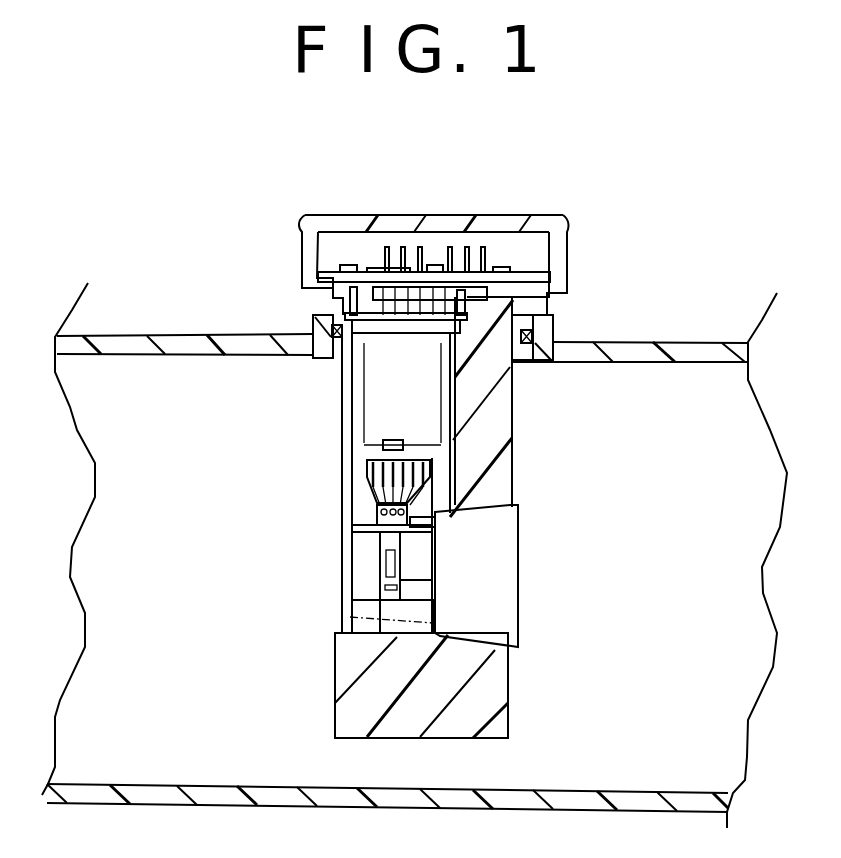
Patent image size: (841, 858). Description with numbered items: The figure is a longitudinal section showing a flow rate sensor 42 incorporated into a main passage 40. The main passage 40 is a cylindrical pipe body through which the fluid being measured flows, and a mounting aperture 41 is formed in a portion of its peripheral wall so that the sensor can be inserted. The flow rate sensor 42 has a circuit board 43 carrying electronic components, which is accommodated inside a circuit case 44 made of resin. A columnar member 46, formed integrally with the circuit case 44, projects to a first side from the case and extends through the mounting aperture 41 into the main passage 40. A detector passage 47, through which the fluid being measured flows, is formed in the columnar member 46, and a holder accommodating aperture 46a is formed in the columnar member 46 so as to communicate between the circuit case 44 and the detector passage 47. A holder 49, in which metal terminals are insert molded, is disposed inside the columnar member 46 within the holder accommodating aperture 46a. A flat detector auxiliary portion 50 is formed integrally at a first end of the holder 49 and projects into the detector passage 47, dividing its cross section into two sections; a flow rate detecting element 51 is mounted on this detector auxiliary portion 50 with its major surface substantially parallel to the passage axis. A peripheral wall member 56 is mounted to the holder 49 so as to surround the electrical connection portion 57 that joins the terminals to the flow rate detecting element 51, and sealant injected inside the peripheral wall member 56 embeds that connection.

The main passage 40 is at (712, 342).
The mounting aperture 41 is at (550, 325).
The flow rate sensor 42 is at (300, 221).
The circuit board 43 is at (521, 275).
The circuit case 44 is at (558, 222).
The columnar member 46 is at (512, 412).
The holder accommodating aperture 46a is at (446, 415).
The detector passage 47 is at (510, 627).
The holder 49 is at (378, 407).
The detector auxiliary portion 50 is at (362, 556).
The flow rate detecting element 51 is at (388, 540).
The peripheral wall member 56 is at (365, 492).
The electrical connection portion 57 is at (430, 498).